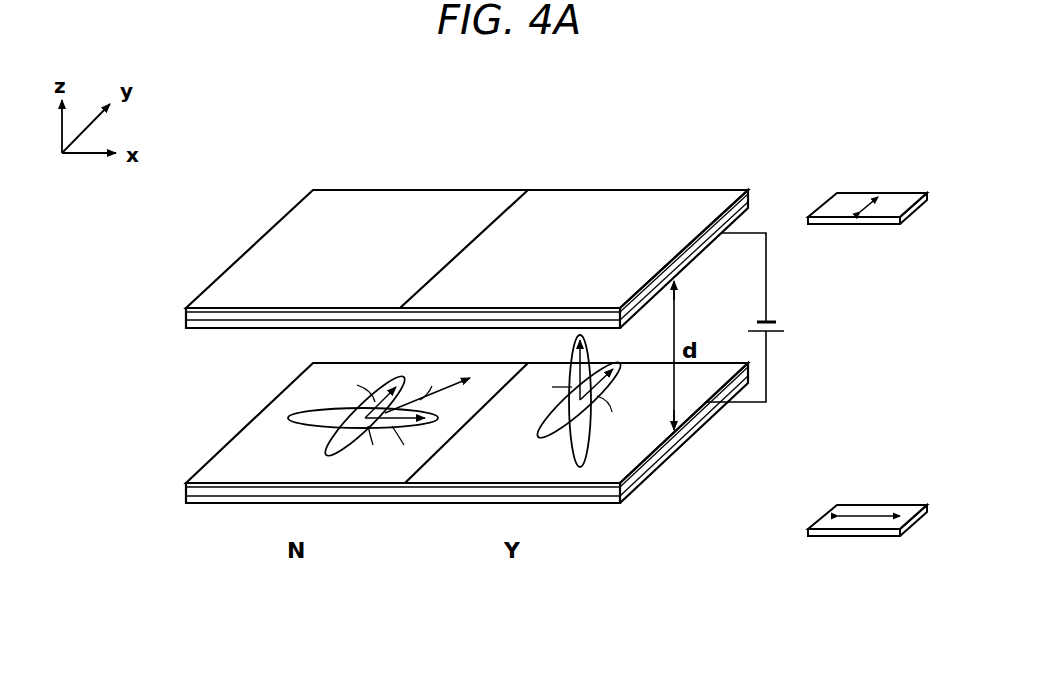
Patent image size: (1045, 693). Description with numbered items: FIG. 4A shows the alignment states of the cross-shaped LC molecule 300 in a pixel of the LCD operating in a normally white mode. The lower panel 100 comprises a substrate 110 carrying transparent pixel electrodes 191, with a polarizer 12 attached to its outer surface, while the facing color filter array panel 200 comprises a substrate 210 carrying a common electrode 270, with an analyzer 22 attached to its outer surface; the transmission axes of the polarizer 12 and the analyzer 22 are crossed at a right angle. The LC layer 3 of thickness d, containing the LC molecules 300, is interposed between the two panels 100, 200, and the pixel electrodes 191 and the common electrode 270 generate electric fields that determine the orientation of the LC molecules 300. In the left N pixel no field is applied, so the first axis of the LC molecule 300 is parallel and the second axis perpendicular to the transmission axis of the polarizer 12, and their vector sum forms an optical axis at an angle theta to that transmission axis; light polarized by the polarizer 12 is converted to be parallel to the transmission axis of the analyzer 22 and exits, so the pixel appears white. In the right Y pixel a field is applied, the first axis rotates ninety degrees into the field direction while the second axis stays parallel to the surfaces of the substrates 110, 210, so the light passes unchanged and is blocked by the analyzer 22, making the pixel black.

The color filter array panel 200 is at (479, 285).
The analyzer 22 is at (864, 225).
The substrate 210 is at (186, 318).
The common electrode 270 is at (200, 330).
The LC layer 3 is at (347, 402).
The LC molecule 300 is at (305, 417).
The panel 100 is at (479, 474).
The pixel electrode 191 is at (200, 472).
The substrate 110 is at (186, 492).
The polarizer 12 is at (862, 537).